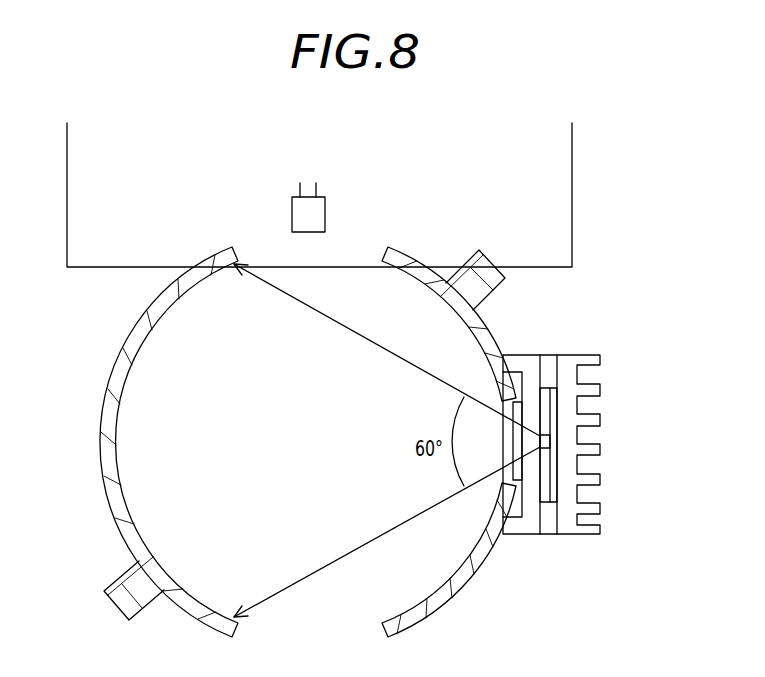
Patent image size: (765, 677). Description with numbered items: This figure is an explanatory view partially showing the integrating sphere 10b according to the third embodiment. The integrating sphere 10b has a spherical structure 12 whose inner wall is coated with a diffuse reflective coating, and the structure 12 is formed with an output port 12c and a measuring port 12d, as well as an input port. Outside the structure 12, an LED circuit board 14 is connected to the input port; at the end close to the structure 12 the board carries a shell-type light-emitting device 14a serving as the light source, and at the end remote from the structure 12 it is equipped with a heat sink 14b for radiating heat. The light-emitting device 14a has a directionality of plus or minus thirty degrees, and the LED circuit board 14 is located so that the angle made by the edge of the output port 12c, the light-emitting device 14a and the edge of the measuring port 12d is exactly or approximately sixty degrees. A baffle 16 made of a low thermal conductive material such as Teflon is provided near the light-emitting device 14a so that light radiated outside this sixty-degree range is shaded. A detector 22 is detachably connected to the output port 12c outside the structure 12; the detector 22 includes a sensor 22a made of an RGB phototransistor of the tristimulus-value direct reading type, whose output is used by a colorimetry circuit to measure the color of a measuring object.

The integrating sphere 10b is at (590, 277).
The structure 12 is at (107, 393).
The output port 12c is at (316, 274).
The measuring port 12d is at (315, 627).
The LED circuit board 14 is at (556, 398).
The light-emitting device 14a is at (548, 434).
The heat sink 14b is at (567, 535).
The baffle 16 is at (520, 355).
The detector 22 is at (572, 175).
The sensor 22a is at (327, 212).